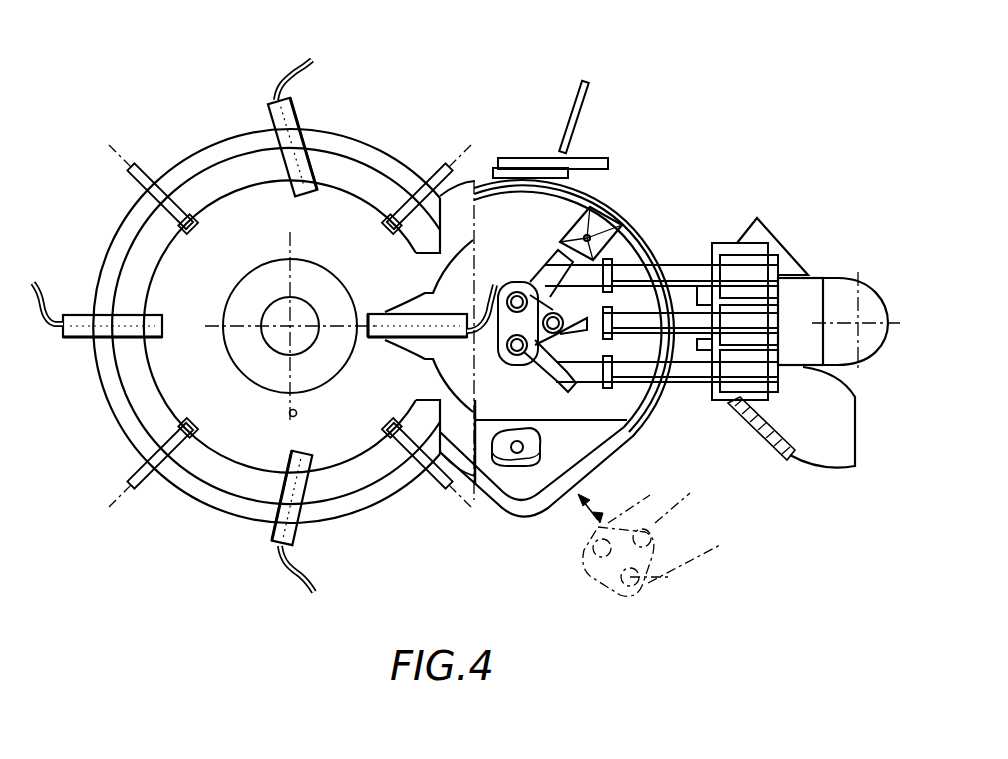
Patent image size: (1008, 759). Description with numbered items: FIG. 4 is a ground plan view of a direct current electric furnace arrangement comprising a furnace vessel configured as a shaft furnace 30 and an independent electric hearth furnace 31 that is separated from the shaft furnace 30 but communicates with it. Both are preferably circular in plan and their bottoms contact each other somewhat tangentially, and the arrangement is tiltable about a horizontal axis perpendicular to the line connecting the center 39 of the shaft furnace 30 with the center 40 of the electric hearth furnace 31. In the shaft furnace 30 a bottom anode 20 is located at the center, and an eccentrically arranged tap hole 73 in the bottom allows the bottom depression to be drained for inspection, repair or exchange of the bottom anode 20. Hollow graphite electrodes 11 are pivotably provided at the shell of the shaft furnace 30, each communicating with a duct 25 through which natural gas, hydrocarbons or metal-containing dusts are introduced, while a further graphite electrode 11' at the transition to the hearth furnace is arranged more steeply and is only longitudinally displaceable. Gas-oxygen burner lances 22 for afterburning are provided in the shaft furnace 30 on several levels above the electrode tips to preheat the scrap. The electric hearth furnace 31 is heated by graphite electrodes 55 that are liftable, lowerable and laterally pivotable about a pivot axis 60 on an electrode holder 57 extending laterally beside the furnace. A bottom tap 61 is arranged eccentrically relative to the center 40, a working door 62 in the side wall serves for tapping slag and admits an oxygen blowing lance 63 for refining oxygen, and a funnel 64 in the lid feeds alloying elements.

The shaft furnace 30 is at (246, 100).
The bottom anode 20 is at (280, 339).
The center of the shaft furnace 39 is at (291, 326).
The tap hole 73 is at (291, 416).
The graphite electrodes 11 is at (192, 314).
The further graphite electrode 11' is at (423, 343).
The duct 25 is at (316, 589).
The gas-oxygen burner lances 22 is at (128, 162).
The electric hearth furnace 31 is at (677, 152).
The center of the electric hearth furnace 40 is at (532, 318).
The graphite electrodes 55 is at (567, 345).
The funnel 64 is at (597, 222).
The electrode holder 57 is at (676, 272).
The pivot axis 60 is at (858, 323).
The bottom tap 61 is at (517, 452).
The working door 62 is at (600, 158).
The oxygen blowing lance 63 is at (575, 106).